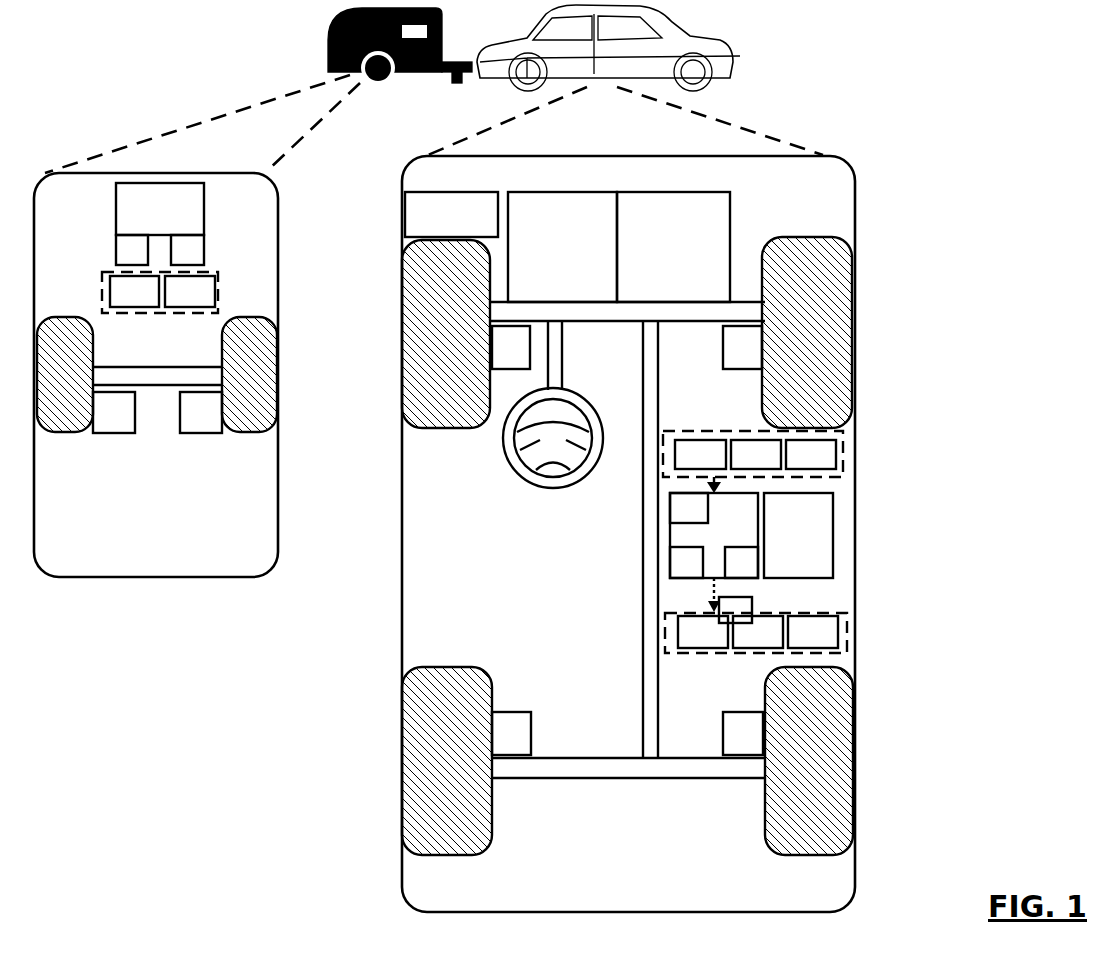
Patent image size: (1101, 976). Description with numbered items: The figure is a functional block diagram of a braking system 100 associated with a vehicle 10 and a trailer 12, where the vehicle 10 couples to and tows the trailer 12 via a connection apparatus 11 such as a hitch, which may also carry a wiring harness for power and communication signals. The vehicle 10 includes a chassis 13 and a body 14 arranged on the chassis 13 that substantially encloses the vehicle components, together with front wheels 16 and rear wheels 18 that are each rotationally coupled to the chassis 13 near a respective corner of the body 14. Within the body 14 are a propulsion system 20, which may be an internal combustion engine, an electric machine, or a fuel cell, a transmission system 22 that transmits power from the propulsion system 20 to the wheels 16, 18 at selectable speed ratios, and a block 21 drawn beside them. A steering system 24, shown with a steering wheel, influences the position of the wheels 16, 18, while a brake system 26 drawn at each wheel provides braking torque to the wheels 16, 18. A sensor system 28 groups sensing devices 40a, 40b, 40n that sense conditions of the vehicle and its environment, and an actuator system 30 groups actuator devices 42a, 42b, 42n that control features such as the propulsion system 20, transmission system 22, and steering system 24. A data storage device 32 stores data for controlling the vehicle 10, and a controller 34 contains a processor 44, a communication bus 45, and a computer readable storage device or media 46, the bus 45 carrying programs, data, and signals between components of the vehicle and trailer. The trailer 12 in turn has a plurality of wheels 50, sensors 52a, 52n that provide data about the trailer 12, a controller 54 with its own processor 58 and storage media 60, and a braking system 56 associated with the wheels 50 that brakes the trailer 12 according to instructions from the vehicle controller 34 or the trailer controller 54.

The braking system 100 is at (1010, 110).
The vehicle 10 is at (735, 55).
The connection apparatus 11 is at (458, 51).
The trailer 12 is at (330, 46).
The chassis 13 is at (641, 696).
The body 14 is at (400, 518).
The front wheels 16 is at (452, 428).
The rear wheels 18 is at (462, 855).
The propulsion system 20 is at (562, 247).
The battery 21 is at (451, 214).
The transmission system 22 is at (673, 247).
The steering system 24 is at (592, 348).
The brake system 26 is at (627, 540).
The sensor system 28 is at (690, 430).
The actuator system 30 is at (710, 653).
The data storage device 32 is at (798, 535).
The controller 34 is at (714, 535).
The sensing device 40a is at (700, 454).
The sensing device 40b is at (756, 454).
The sensing device 40n is at (811, 454).
The actuator device 42a is at (703, 632).
The actuator device 42b is at (758, 632).
The actuator device 42n is at (813, 632).
The processor 44 is at (711, 585).
The communication bus 45 is at (689, 508).
The computer readable storage device or media 46 is at (741, 562).
The wheels 50 is at (83, 432).
The sensor 52a is at (134, 291).
The sensor 52n is at (190, 291).
The controller 54 is at (160, 210).
The braking system 56 is at (157, 412).
The processor 58 is at (132, 250).
The computer readable storage device or media 60 is at (187, 250).